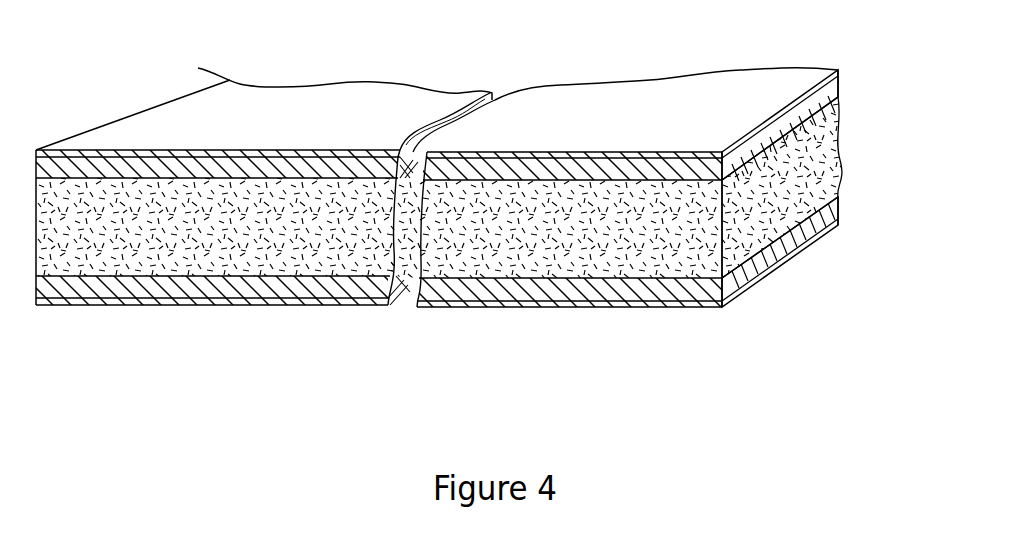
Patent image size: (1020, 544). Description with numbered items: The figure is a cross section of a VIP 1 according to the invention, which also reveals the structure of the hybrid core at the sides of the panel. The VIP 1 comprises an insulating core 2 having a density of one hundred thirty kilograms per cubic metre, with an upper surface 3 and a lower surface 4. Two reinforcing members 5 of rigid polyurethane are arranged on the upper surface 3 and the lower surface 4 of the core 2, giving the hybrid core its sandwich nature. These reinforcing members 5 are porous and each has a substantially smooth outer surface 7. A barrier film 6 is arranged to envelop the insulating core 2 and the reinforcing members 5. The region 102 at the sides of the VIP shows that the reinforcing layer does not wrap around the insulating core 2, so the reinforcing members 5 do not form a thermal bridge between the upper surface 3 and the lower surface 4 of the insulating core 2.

The VIP 1 is at (512, 353).
The insulating core 2 is at (120, 215).
The upper surface 3 is at (303, 178).
The lower surface 4 is at (190, 277).
The reinforcing member 5 is at (255, 165).
The barrier film 6 is at (405, 112).
The outer surface 7 is at (222, 153).
The side of the VIP 102 is at (842, 102).